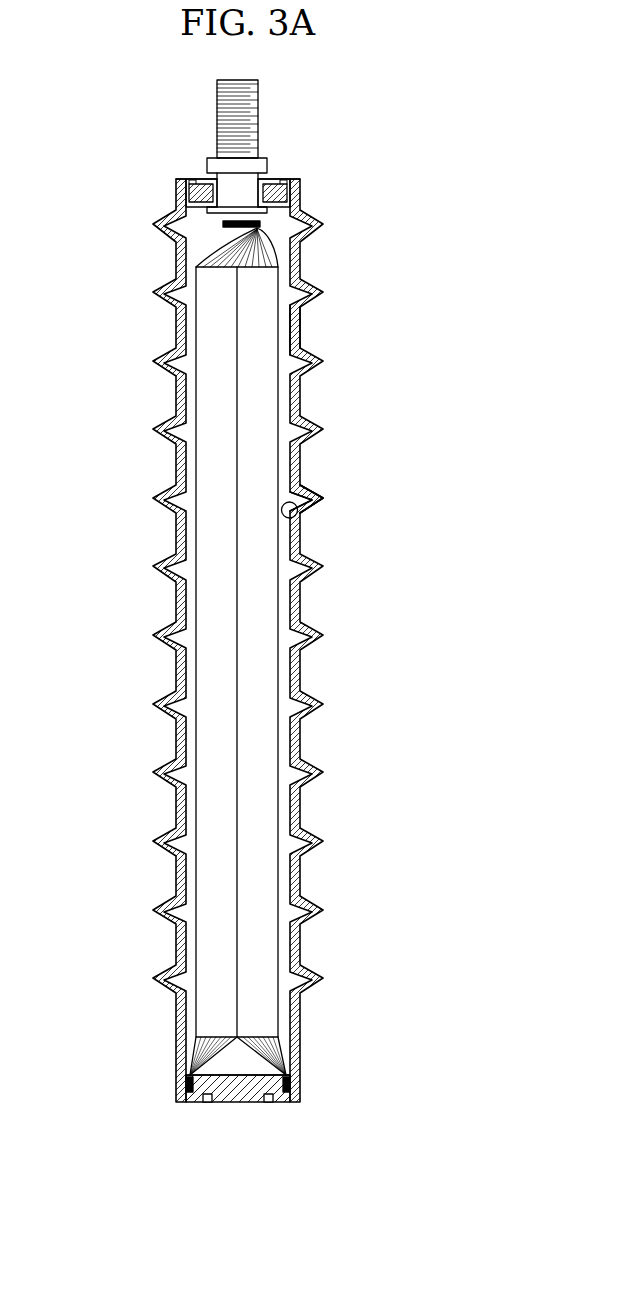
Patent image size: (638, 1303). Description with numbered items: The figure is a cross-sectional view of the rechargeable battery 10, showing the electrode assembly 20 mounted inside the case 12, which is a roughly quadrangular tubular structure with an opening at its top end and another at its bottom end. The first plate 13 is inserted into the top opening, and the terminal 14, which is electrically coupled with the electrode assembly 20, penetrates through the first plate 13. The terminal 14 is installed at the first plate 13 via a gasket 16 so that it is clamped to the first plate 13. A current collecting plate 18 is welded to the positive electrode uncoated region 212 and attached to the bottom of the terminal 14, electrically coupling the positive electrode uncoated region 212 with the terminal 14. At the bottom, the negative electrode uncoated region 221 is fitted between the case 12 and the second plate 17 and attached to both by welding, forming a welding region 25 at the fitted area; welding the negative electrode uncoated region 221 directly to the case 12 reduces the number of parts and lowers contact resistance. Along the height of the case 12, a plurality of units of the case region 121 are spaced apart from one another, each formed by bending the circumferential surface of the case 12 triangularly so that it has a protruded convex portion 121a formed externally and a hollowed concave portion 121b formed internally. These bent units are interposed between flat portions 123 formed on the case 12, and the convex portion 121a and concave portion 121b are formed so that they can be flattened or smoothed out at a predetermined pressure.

The rechargeable battery 10 is at (140, 103).
The case 12 is at (302, 663).
The first plate 13 is at (300, 193).
The terminal 14 is at (260, 99).
The gasket 16 is at (270, 170).
The second plate 17 is at (250, 1103).
The current collecting plate 18 is at (216, 225).
The electrode assembly 20 is at (260, 740).
The welding region 25 is at (185, 1082).
The case region 121 is at (412, 473).
The convex portion 121a is at (313, 491).
The concave portion 121b is at (300, 530).
The flat portion 123 is at (300, 328).
The positive electrode uncoated region 212 is at (228, 253).
The negative electrode uncoated region 221 is at (214, 1057).